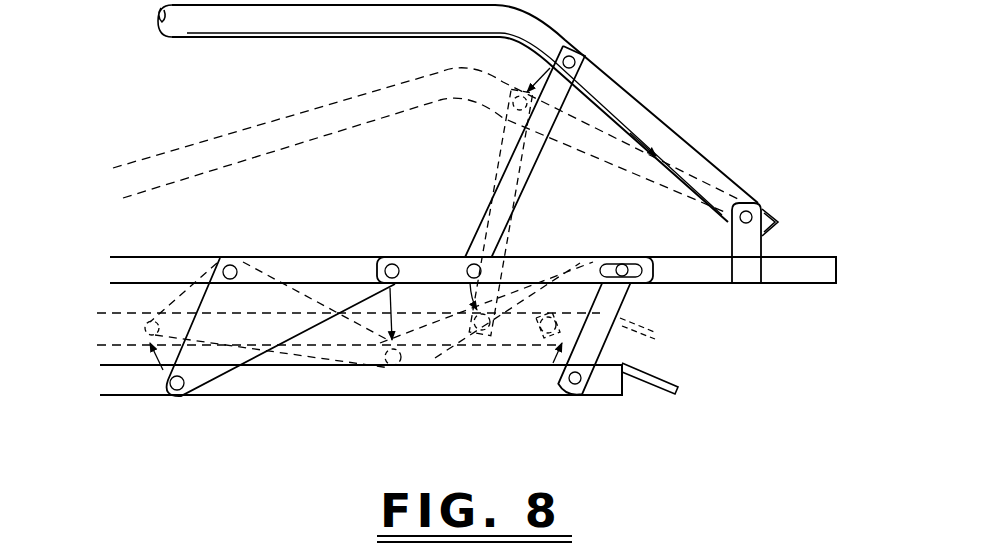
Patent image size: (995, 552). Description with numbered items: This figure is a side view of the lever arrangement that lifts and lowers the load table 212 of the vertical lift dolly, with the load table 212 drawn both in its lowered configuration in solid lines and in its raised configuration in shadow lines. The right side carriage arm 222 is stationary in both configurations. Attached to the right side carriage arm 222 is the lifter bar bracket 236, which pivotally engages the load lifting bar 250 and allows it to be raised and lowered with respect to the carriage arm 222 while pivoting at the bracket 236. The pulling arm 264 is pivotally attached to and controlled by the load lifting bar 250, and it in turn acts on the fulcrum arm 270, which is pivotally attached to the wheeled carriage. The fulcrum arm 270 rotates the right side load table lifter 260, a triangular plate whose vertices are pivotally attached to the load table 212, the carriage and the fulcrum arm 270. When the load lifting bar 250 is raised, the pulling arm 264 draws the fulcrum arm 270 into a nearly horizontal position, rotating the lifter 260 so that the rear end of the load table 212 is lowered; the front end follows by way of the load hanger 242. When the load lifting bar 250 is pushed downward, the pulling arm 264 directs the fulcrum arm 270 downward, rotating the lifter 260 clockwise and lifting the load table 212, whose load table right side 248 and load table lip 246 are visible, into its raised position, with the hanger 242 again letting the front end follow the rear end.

The load table 212 is at (420, 370).
The right side carriage arm 222 is at (807, 266).
The lifter bar bracket 236 is at (745, 240).
The load hanger 242 is at (614, 331).
The load table lip 246 is at (673, 383).
The load table right side 248 is at (287, 388).
The load lifting bar 250 is at (547, 36).
The right side load table lifter 260 is at (268, 332).
The pulling arm 264 is at (529, 180).
The fulcrum arm 270 is at (425, 268).